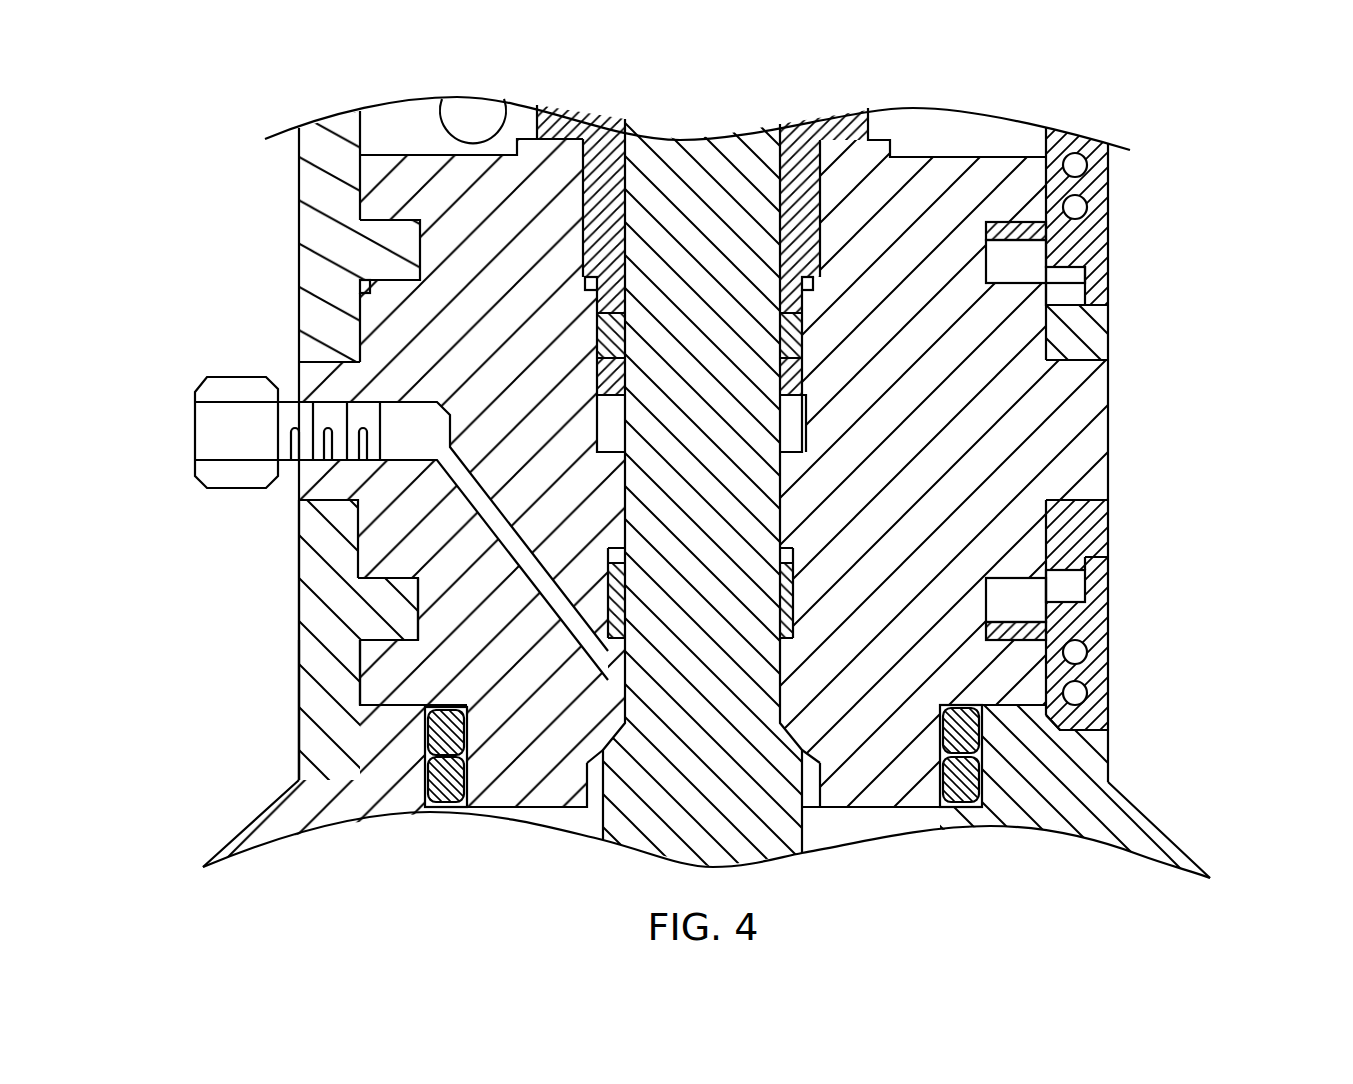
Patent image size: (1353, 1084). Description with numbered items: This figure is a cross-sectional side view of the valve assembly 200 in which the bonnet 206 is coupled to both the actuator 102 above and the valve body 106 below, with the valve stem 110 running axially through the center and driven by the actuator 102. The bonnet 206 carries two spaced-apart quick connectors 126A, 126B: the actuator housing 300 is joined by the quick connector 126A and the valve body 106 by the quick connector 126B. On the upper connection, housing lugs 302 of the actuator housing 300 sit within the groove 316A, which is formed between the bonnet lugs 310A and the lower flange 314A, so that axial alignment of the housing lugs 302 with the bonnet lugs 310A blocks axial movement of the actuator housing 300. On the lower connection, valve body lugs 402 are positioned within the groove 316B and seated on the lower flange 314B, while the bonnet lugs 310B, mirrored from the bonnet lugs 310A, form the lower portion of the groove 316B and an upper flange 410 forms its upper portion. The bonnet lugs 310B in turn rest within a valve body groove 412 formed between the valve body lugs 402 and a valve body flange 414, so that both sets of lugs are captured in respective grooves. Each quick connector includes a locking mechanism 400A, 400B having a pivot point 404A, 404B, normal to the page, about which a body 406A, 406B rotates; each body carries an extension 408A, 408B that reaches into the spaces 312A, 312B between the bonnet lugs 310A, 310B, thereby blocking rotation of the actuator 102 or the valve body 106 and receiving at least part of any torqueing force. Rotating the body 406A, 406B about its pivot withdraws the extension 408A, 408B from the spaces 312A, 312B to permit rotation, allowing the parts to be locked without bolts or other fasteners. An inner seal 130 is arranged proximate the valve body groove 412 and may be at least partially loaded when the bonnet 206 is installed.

The actuator 102 is at (268, 99).
The valve body 106 is at (1118, 812).
The valve stem 110 is at (695, 800).
The quick connector 126A is at (173, 218).
The quick connector 126B is at (200, 613).
The inner seal 130 is at (467, 777).
The valve assembly 200 is at (1184, 112).
The bonnet 206 is at (1232, 392).
The actuator housing 300 is at (312, 138).
The housing lugs 302 is at (392, 246).
The bonnet lugs 310A is at (392, 185).
The bonnet lugs 310B is at (400, 682).
The spaces 312A is at (1010, 258).
The spaces 312B is at (1009, 598).
The lower flange 314A is at (362, 287).
The lower flange 314B is at (360, 632).
The groove 316A is at (440, 264).
The groove 316B is at (440, 624).
The locking mechanism 400A is at (1167, 179).
The locking mechanism 400B is at (1222, 664).
The valve body lugs 402 is at (395, 609).
The pivot point 404A is at (1078, 169).
The pivot point 404B is at (1078, 694).
The body 406A is at (1092, 248).
The body 406B is at (1097, 620).
The extension 408A is at (1050, 231).
The extension 408B is at (1023, 628).
The upper flange 410 is at (378, 575).
The valve body groove 412 is at (348, 680).
The valve body flange 414 is at (390, 708).